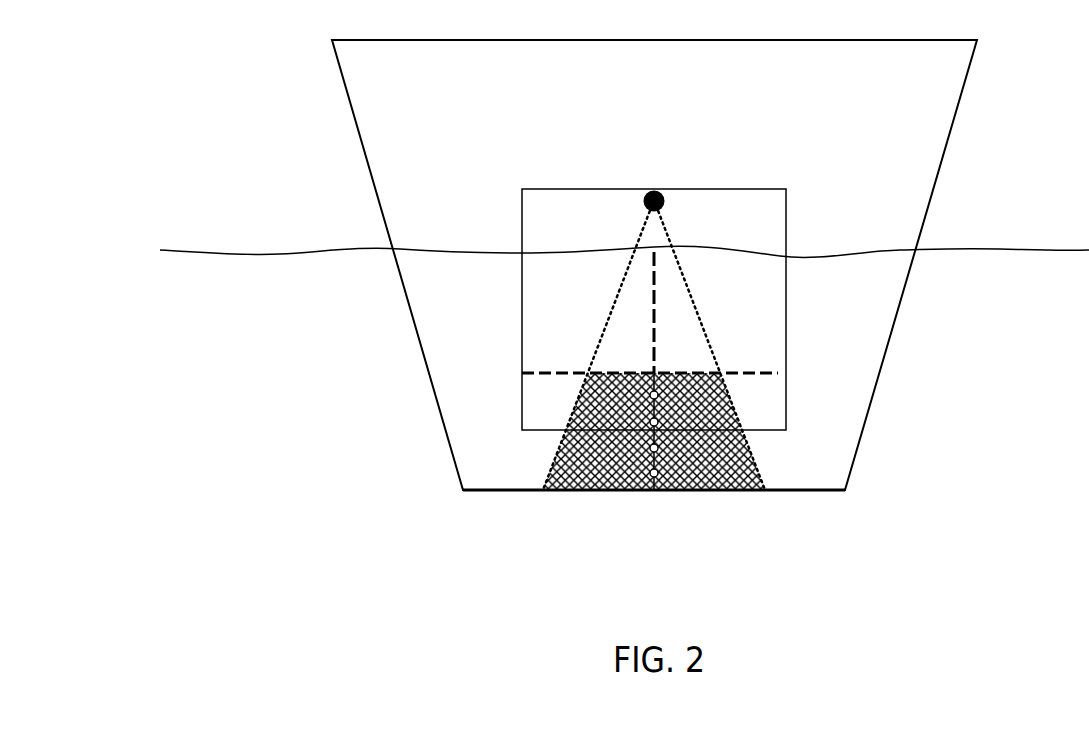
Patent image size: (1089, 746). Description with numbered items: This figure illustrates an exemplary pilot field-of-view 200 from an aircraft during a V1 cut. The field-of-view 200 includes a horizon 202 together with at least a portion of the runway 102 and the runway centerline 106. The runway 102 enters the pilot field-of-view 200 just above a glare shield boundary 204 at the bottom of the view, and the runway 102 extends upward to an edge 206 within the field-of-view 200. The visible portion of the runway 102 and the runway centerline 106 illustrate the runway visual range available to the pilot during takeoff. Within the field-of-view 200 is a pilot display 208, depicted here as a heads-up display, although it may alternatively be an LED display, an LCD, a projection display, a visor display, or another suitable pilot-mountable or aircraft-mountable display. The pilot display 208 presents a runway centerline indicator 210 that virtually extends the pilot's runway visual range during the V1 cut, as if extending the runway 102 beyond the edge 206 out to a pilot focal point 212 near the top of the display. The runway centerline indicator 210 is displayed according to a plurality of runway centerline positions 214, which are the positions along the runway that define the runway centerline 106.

The pilot field-of-view 200 is at (314, 54).
The horizon 202 is at (446, 238).
The glare shield boundary 204 is at (496, 502).
The edge 206 is at (522, 373).
The pilot display 208 is at (786, 419).
The runway centerline indicator 210 is at (655, 338).
The pilot focal point 212 is at (662, 193).
The runway centerline positions 214 is at (650, 472).
The runway centerline 106 is at (660, 468).
The runway 102 is at (563, 476).